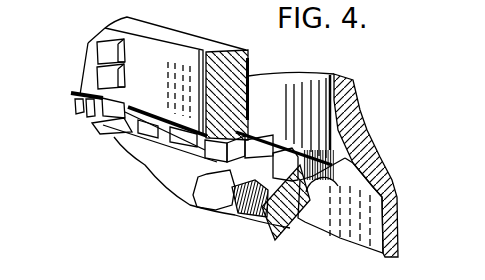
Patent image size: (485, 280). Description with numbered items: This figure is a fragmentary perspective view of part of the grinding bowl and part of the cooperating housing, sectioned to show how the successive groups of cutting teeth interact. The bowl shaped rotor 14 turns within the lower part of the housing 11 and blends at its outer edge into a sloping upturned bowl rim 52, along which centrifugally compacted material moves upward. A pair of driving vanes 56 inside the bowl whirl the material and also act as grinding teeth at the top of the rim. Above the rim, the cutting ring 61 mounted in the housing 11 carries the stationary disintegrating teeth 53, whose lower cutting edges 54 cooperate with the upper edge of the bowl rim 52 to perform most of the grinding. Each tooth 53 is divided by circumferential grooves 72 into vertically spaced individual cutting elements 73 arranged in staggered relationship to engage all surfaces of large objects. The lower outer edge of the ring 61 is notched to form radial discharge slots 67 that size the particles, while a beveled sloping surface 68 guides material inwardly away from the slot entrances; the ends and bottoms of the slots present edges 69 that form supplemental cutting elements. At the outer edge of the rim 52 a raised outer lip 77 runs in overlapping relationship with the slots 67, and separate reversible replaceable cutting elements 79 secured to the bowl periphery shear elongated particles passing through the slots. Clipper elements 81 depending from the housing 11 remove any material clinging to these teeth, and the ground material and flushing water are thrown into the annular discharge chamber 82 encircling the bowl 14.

The housing 11 is at (356, 118).
The bowl shaped rotor 14 is at (182, 188).
The bowl rim 52 is at (250, 220).
The stationary disintegrating teeth 53 is at (96, 51).
The lower cutting edges 54 is at (115, 136).
The driving vanes 56 is at (208, 203).
The cutting ring 61 is at (239, 27).
The discharge slots 67 is at (180, 148).
The sloping surface 68 is at (198, 157).
The edges of discharge slots 69 is at (89, 117).
The circumferential grooves 72 is at (124, 91).
The individual cutting elements 73 is at (122, 53).
The outer lip 77 is at (287, 170).
The replaceable cutting elements 79 is at (262, 150).
The clipper elements 81 is at (340, 204).
The annular discharge chamber 82 is at (330, 228).